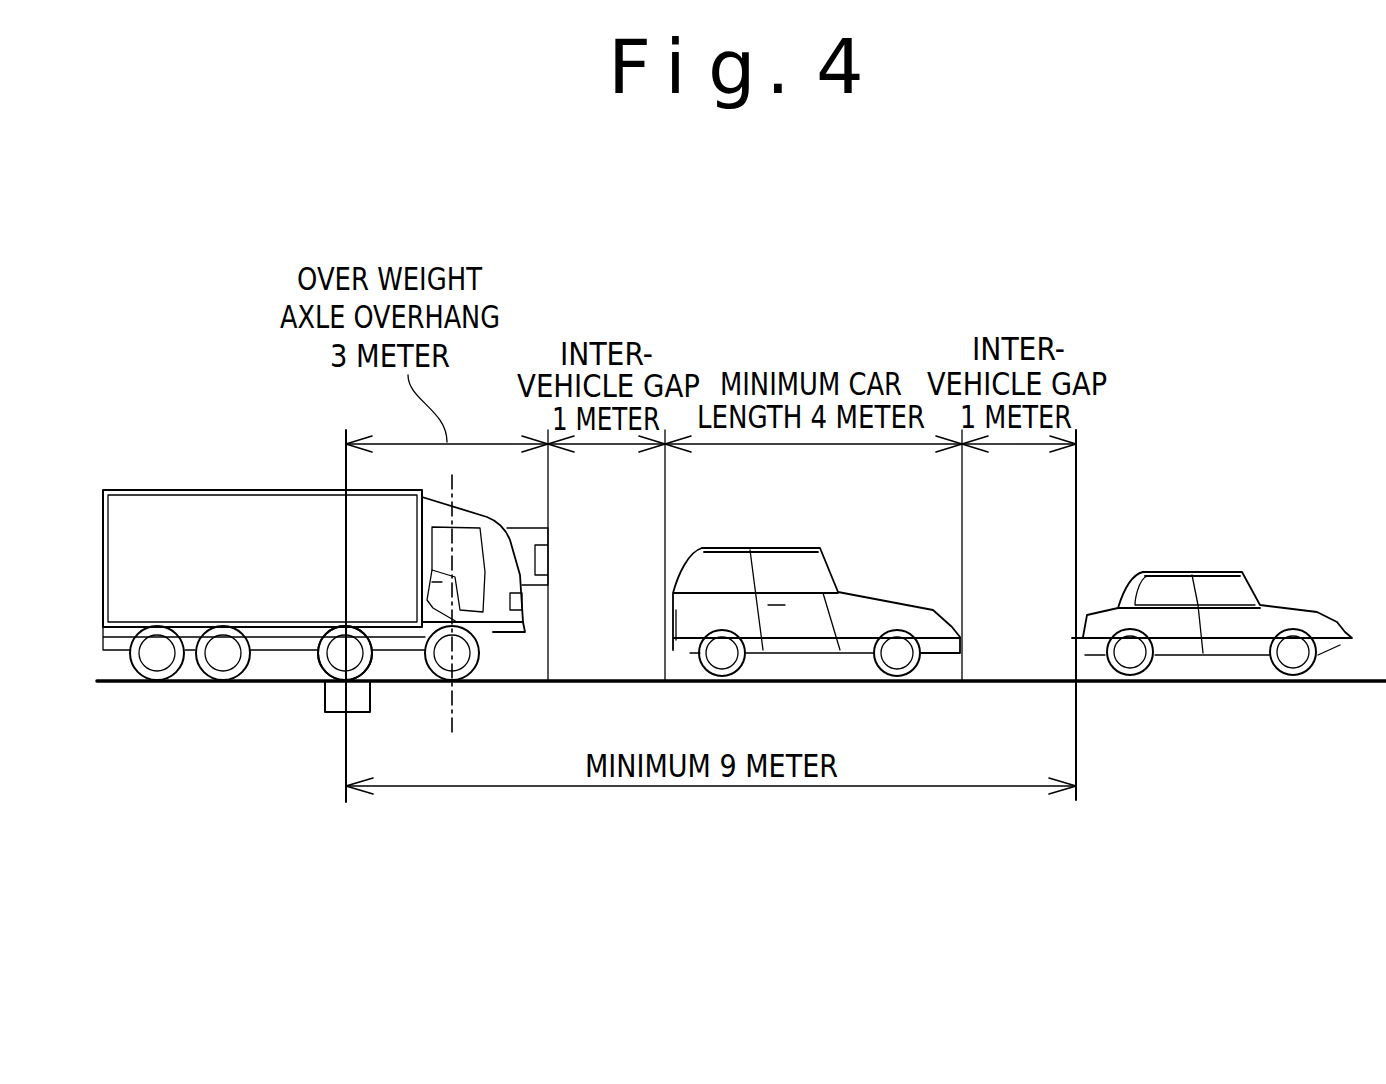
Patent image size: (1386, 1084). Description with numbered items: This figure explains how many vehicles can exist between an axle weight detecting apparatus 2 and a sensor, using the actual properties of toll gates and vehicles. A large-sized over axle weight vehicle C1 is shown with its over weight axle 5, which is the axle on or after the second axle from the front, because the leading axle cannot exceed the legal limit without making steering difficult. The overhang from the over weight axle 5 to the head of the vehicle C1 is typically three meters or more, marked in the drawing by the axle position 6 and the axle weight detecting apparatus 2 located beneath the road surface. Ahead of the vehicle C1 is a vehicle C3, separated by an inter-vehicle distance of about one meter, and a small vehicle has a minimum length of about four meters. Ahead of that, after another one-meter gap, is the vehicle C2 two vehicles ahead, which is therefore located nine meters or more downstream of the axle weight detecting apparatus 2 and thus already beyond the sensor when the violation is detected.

The over axle weight vehicle C1 is at (175, 500).
The vehicle two vehicles ahead C2 is at (1312, 610).
The vehicle C3 is at (887, 610).
The over weight axle 5 is at (343, 651).
The axle weight detecting apparatus 2 is at (335, 713).
The axle position 6 is at (453, 700).